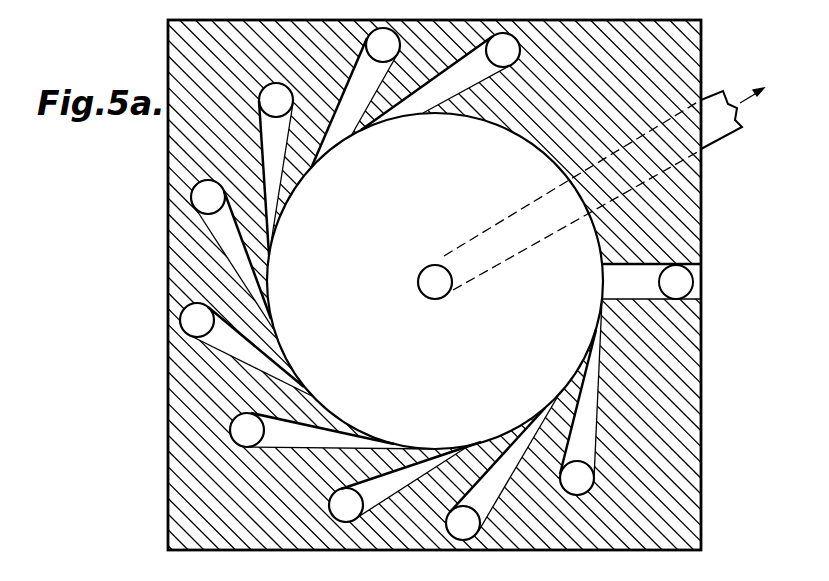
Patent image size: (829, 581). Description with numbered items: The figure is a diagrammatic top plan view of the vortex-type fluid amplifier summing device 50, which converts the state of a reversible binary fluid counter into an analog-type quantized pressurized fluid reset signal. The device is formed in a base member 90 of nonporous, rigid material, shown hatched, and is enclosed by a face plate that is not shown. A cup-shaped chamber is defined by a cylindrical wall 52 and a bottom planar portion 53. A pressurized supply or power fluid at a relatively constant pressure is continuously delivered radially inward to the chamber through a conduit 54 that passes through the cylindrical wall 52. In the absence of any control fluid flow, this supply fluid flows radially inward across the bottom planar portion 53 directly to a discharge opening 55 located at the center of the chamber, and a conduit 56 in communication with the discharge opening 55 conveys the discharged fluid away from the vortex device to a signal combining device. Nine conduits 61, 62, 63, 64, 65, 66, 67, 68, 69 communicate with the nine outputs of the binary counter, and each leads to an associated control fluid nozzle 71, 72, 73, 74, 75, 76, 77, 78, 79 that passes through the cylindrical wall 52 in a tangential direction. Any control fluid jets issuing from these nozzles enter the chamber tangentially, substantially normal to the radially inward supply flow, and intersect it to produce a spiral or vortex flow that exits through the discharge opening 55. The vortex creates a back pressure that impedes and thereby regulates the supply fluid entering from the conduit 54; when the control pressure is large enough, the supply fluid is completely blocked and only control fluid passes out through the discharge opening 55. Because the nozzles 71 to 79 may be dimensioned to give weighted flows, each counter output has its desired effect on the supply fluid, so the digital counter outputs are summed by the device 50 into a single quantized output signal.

The fluid amplifier summing device 50 is at (738, 521).
The base member 90 is at (701, 40).
The cylindrical wall 52 is at (598, 283).
The bottom planar portion 53 is at (435, 281).
The conduit 54 is at (657, 270).
The discharge opening 55 is at (434, 299).
The conduit 56 is at (708, 137).
The conduit 61 is at (593, 463).
The conduit 62 is at (488, 503).
The conduit 63 is at (387, 492).
The conduit 64 is at (287, 442).
The conduit 65 is at (222, 343).
The conduit 66 is at (214, 233).
The conduit 67 is at (262, 144).
The conduit 68 is at (352, 108).
The conduit 69 is at (462, 80).
The control fluid nozzle 71 is at (597, 332).
The control fluid nozzle 72 is at (548, 410).
The control fluid nozzle 73 is at (474, 447).
The control fluid nozzle 74 is at (390, 445).
The control fluid nozzle 75 is at (305, 390).
The control fluid nozzle 76 is at (270, 322).
The control fluid nozzle 77 is at (270, 240).
The control fluid nozzle 78 is at (310, 162).
The control fluid nozzle 79 is at (378, 125).